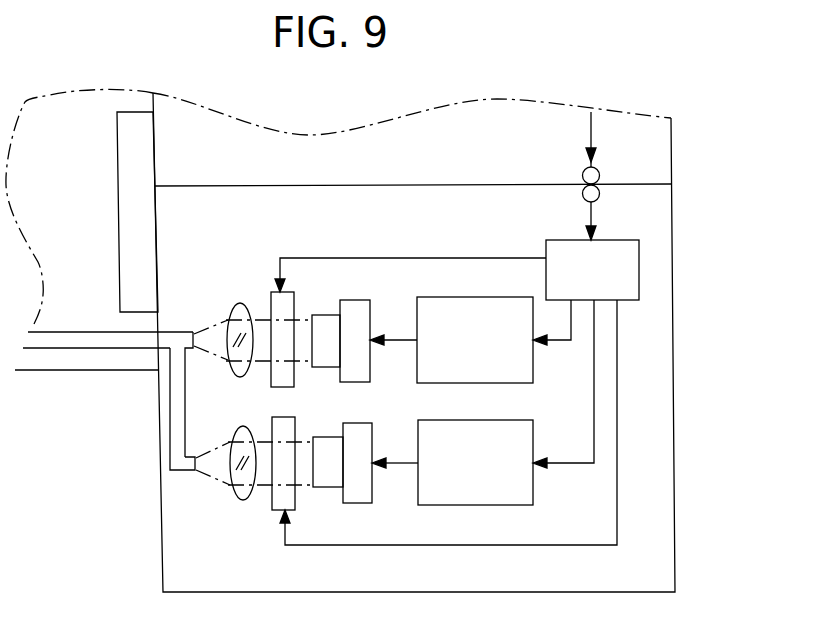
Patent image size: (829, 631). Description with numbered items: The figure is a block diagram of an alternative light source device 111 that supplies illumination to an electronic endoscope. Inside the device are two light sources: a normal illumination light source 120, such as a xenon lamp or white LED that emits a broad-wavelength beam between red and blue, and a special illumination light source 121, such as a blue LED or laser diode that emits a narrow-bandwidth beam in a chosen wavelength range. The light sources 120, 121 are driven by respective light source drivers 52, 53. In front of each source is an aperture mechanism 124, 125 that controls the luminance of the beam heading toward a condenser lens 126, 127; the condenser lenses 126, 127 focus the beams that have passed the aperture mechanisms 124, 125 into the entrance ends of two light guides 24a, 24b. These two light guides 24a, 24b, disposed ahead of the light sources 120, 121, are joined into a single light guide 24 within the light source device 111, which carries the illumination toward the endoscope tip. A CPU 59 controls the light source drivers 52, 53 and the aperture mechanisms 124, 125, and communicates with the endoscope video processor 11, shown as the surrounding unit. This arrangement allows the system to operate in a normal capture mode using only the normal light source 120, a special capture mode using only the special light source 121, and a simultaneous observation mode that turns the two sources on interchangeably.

The endoscope video processor 11 is at (688, 149).
The light source device 111 is at (146, 560).
The light guide 24 is at (92, 338).
The light guide 24a is at (188, 332).
The light guide 24b is at (175, 415).
The light source driver 52 is at (455, 297).
The light source driver 53 is at (458, 420).
The CPU 59 is at (550, 240).
The normal illumination light source 120 is at (353, 300).
The special illumination light source 121 is at (358, 423).
The aperture mechanism 124 is at (272, 292).
The aperture mechanism 125 is at (277, 512).
The condenser lens 126 is at (240, 303).
The condenser lens 127 is at (233, 436).